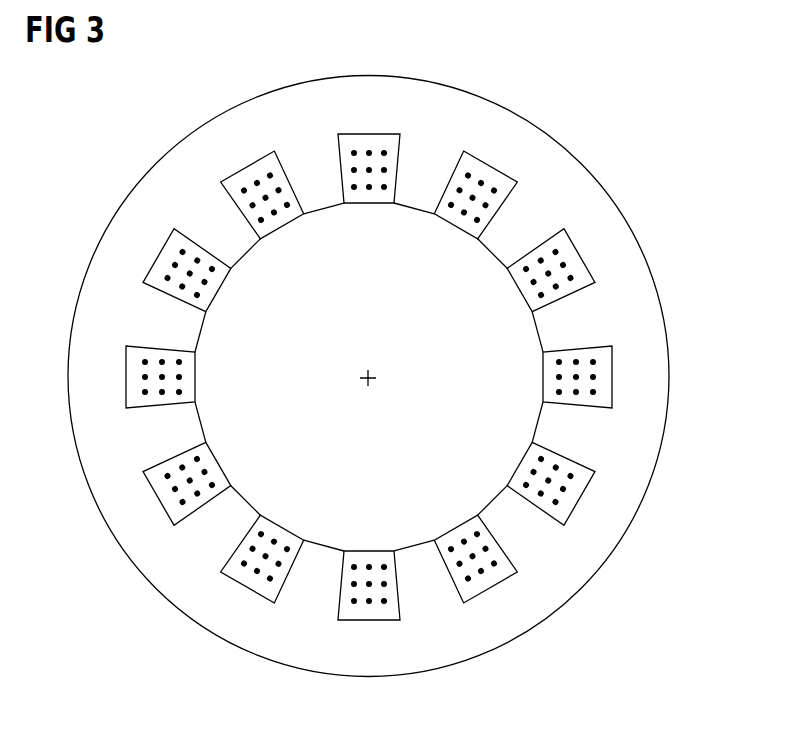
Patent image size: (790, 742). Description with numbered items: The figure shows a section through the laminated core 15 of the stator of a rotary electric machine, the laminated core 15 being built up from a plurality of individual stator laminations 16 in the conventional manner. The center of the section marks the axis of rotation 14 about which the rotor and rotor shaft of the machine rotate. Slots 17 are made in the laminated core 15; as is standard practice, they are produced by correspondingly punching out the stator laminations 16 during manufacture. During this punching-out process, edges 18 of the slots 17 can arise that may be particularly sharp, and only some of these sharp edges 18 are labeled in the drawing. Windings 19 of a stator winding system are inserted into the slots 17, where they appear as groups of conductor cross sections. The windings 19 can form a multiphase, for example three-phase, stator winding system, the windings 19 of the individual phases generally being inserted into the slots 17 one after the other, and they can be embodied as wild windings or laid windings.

The axis of rotation 14 is at (368, 386).
The laminated core 15 is at (368, 376).
The stator laminations 16 is at (580, 160).
The slots 17 is at (372, 200).
The edges 18 is at (233, 272).
The windings 19 is at (378, 138).